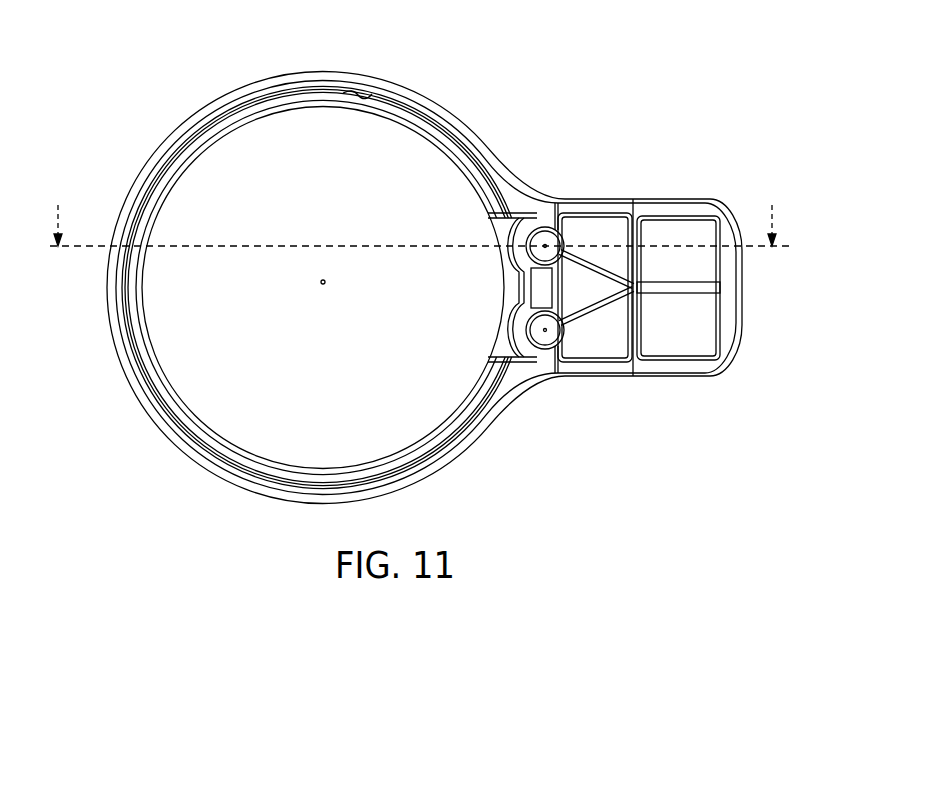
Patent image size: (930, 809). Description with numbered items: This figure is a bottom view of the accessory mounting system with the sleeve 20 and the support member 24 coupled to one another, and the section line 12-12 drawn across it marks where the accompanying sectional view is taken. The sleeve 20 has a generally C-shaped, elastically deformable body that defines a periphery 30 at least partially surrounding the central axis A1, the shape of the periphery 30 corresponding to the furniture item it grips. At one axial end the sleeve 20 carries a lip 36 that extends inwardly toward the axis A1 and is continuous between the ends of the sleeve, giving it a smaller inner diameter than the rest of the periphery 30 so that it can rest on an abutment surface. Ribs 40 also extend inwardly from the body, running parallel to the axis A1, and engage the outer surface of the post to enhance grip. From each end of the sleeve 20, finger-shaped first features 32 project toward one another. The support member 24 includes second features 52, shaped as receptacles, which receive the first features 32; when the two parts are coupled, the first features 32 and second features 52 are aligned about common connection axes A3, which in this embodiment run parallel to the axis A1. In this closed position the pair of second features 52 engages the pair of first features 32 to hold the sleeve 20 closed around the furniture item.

The sleeve 20 is at (426, 100).
The periphery 30 is at (114, 352).
The lip 36 is at (266, 114).
The ribs 40 is at (358, 96).
The support member 24 is at (729, 232).
The first features 32 is at (506, 258).
The connection axes A3 is at (545, 243).
The second features 52 is at (568, 236).
The axis A1 is at (322, 283).
The section line 12-12 is at (774, 203).